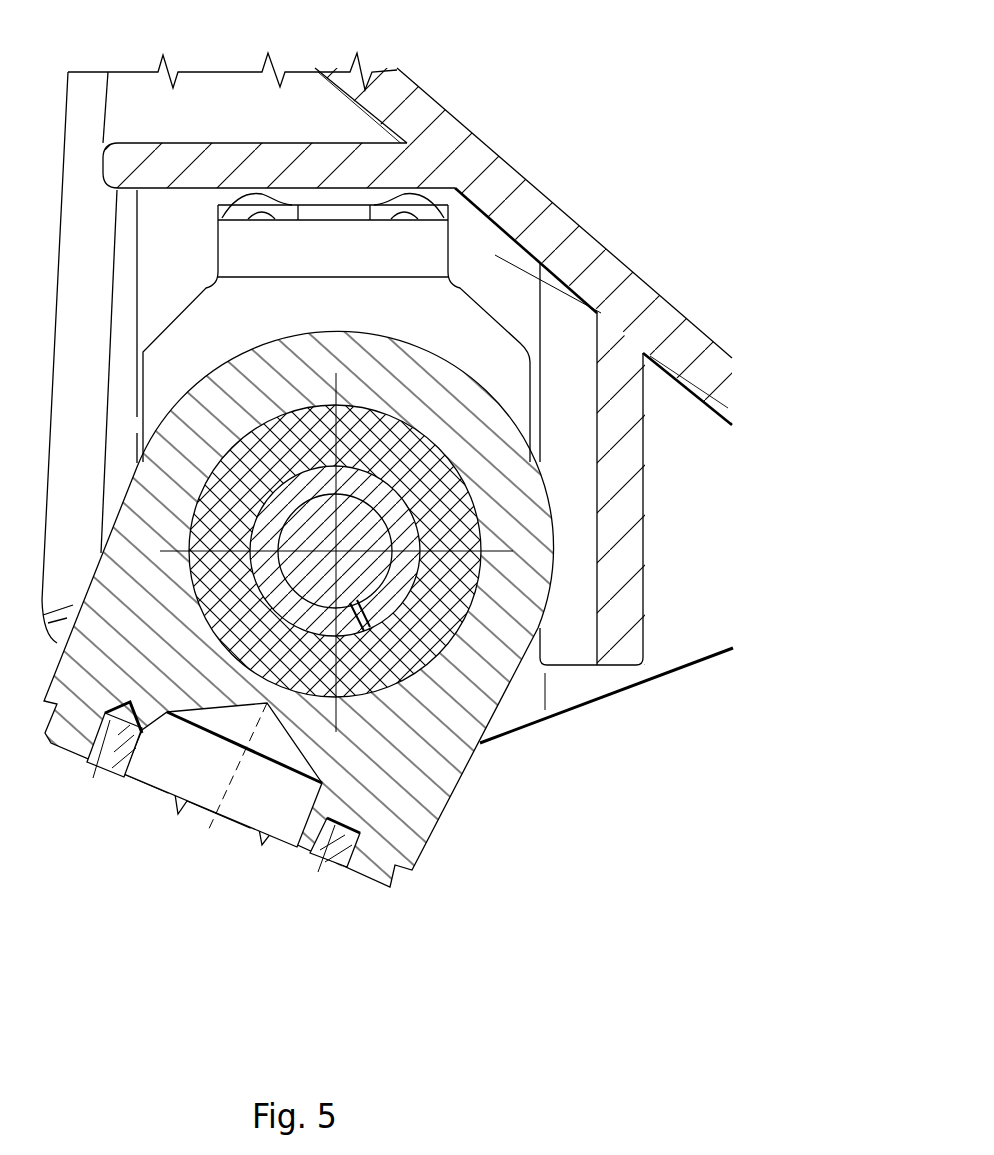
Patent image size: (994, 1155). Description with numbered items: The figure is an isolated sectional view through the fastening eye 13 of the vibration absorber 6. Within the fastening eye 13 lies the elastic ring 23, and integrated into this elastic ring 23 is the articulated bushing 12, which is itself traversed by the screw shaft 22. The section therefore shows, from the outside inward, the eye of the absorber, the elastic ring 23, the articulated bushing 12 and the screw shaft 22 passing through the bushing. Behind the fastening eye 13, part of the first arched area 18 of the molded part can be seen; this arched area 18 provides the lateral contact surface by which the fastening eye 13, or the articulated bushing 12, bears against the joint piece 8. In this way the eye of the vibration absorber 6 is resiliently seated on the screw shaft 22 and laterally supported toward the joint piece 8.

The vibration absorber 6 is at (267, 815).
The joint piece 8 is at (493, 257).
The articulated bushing 12 is at (400, 500).
The fastening eye 13 is at (420, 392).
The first arched area 18 is at (383, 210).
The screw shaft 22 is at (360, 531).
The elastic ring 23 is at (530, 357).